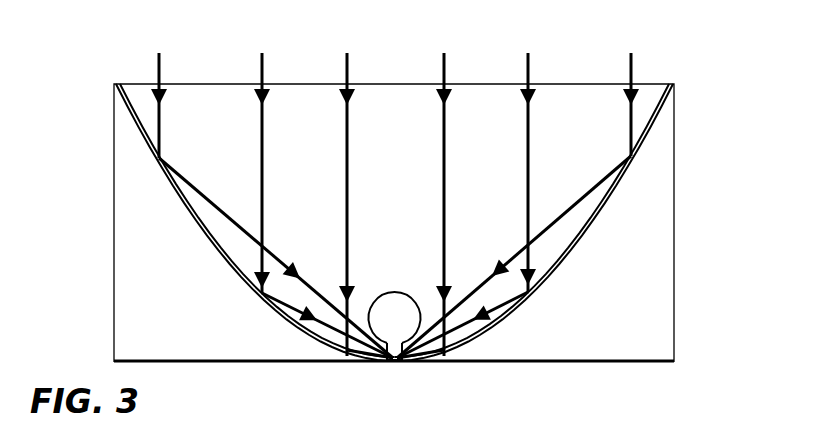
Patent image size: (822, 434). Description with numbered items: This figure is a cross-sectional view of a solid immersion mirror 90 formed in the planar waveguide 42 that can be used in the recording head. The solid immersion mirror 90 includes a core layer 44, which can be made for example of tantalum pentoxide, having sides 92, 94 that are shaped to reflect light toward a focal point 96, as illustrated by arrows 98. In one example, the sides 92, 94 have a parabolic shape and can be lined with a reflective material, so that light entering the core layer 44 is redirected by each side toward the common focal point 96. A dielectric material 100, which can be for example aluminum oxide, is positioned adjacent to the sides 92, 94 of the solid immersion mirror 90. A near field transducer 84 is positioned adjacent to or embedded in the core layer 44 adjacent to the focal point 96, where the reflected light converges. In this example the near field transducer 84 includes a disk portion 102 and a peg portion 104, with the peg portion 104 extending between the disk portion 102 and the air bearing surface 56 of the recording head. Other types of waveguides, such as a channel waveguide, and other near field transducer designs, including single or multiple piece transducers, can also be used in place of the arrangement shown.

The planar waveguide 42 is at (417, 212).
The core layer 44 is at (302, 101).
The air bearing surface 56 is at (393, 364).
The near field transducer 84 is at (395, 305).
The solid immersion mirror 90 is at (449, 222).
The side 92 is at (218, 262).
The side 94 is at (563, 263).
The focal point 96 is at (391, 364).
The arrows 98 is at (528, 65).
The dielectric material 100 is at (137, 327).
The disk portion 102 is at (385, 313).
The peg portion 104 is at (403, 361).